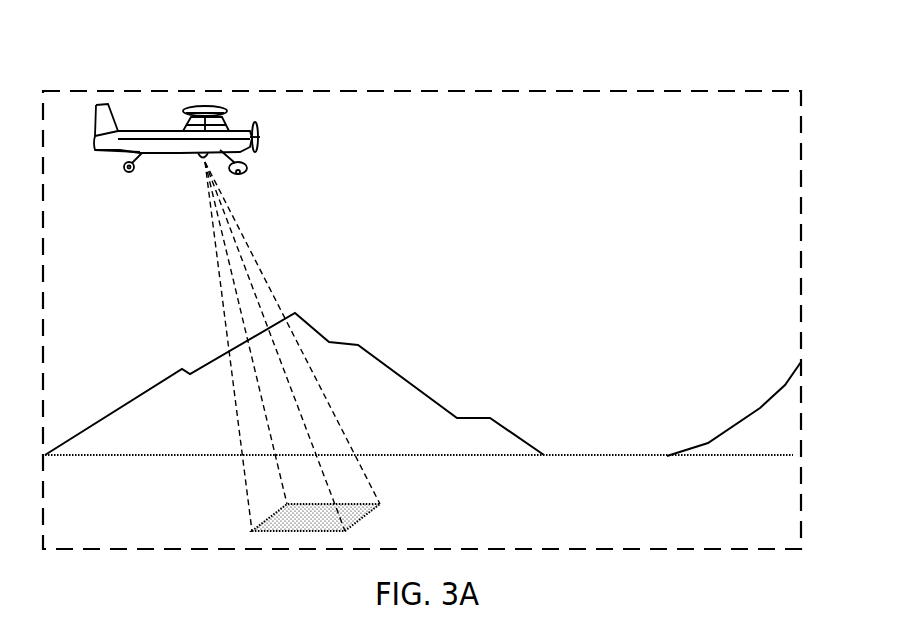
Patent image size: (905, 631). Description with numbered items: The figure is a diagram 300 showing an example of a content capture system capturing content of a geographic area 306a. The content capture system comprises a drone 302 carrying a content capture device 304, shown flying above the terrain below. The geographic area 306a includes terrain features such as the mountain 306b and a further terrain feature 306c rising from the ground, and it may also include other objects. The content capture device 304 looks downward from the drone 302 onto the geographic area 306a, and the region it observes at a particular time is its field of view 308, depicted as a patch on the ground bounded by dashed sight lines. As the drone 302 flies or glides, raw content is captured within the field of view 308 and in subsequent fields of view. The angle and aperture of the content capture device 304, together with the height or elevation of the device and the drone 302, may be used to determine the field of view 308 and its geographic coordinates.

The diagram 300 is at (688, 43).
The drone 302 is at (162, 153).
The content capture device 304 is at (213, 160).
The geographic area 306a is at (419, 489).
The terrain feature 306b is at (294, 384).
The hill terrain 306c is at (734, 409).
The field-of-view (FOV) 308 is at (370, 513).